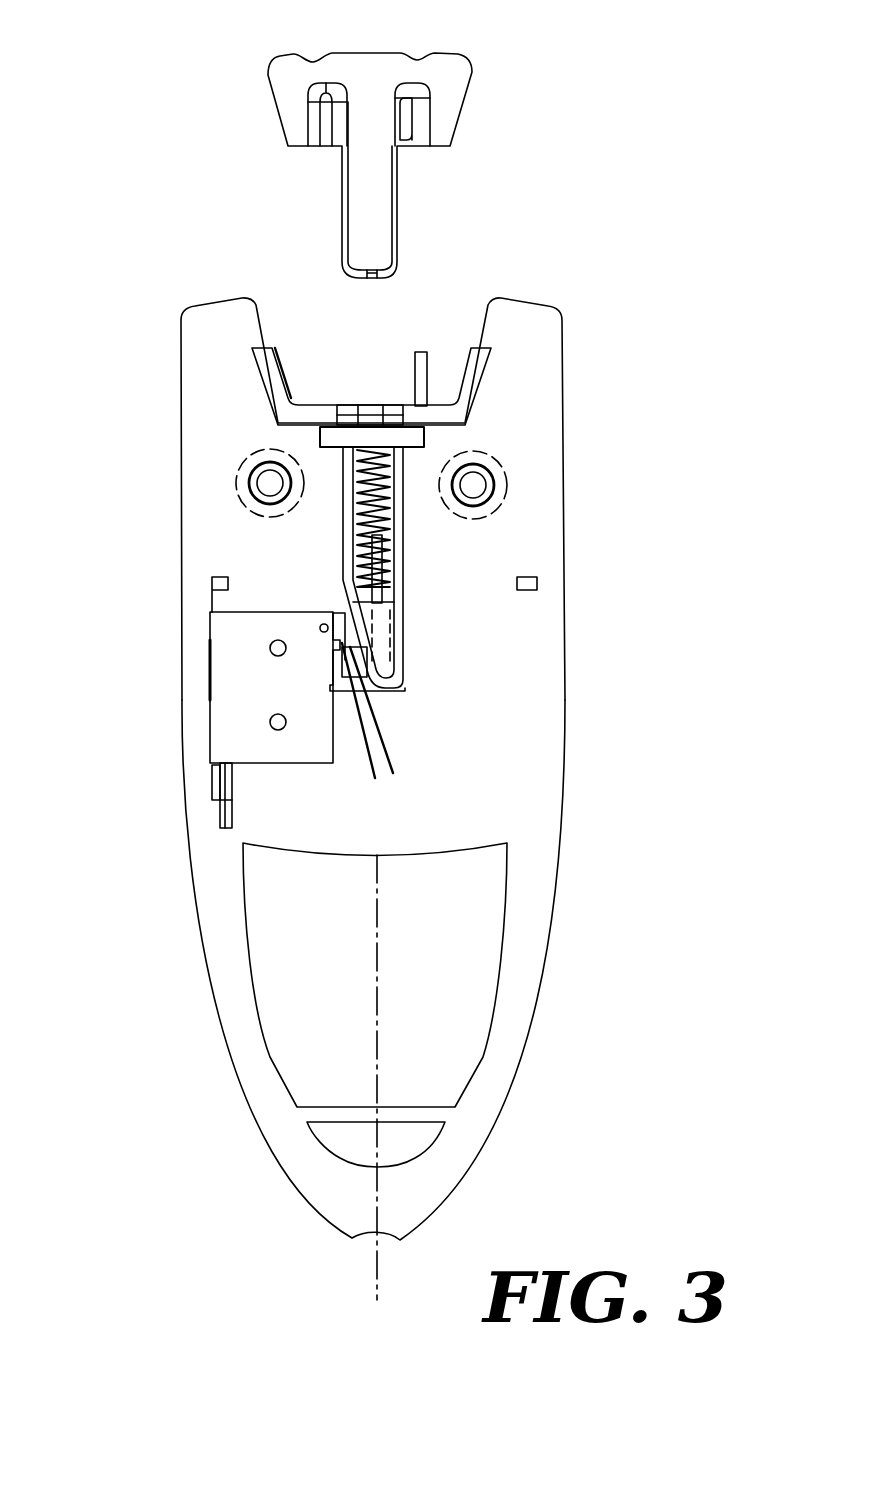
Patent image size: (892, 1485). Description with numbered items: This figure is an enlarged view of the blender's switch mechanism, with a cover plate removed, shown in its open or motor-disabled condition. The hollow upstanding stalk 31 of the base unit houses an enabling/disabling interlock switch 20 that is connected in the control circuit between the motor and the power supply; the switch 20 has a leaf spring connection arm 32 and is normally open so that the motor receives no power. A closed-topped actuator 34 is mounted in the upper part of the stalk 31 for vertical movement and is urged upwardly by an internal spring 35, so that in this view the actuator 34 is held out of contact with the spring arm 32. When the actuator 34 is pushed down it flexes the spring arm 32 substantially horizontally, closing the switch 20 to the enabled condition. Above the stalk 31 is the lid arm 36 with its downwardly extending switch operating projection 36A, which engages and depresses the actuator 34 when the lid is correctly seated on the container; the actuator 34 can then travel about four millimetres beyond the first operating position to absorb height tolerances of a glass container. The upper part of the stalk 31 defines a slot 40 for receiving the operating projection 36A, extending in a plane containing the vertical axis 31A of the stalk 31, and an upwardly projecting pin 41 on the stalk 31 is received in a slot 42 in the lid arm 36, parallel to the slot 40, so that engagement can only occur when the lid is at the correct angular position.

The interlock switch 20 is at (245, 675).
The stalk 31 is at (535, 778).
The vertical axis of the projection 31A is at (377, 1277).
The leaf spring connection arm 32 is at (383, 733).
The actuator 34 is at (397, 577).
The internal spring 35 is at (358, 507).
The arm 36 is at (377, 82).
The switch operating projection 36A is at (368, 236).
The slot 40 is at (400, 407).
The pin 41 is at (421, 368).
The slot 42 is at (421, 125).